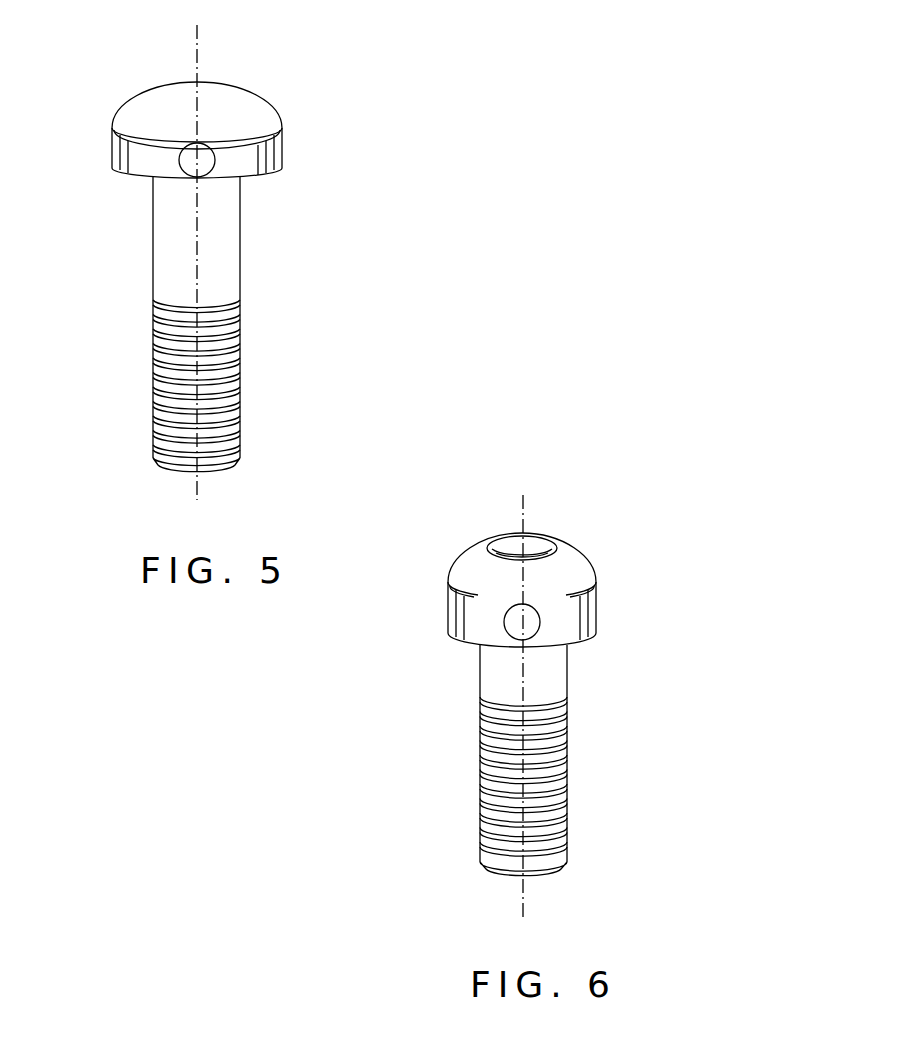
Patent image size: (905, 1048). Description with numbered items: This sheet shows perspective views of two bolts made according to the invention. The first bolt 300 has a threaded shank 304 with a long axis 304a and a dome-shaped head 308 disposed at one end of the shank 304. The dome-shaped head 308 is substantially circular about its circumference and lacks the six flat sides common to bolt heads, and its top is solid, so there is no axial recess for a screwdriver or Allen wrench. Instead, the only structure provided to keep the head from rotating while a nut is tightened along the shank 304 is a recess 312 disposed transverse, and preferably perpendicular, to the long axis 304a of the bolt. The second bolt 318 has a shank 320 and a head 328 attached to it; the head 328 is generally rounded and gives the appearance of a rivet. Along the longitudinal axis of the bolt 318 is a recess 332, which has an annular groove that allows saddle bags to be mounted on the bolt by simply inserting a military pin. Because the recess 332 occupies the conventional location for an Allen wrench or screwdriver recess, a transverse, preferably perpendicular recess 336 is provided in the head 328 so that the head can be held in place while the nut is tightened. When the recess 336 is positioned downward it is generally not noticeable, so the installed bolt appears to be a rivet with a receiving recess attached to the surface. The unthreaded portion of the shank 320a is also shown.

In FIG. 5, the bolt 300 is at (322, 160).
In FIG. 5, the threaded shank 304 is at (240, 210).
In FIG. 5, the long axis 304a is at (198, 286).
In FIG. 5, the dome-shaped head 308 is at (253, 100).
In FIG. 5, the recess 312 is at (180, 162).
In FIG. 6, the bolt 318 is at (664, 527).
In FIG. 6, the shank 320 is at (480, 760).
In FIG. 6, the unthreaded portion of shank 320a is at (522, 683).
In FIG. 6, the head 328 is at (597, 592).
In FIG. 6, the recess 332 is at (540, 543).
In FIG. 6, the recess 336 is at (535, 628).